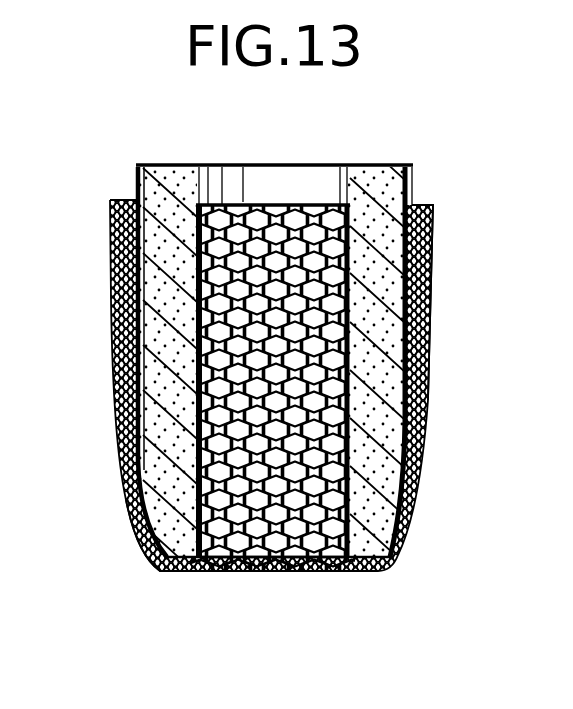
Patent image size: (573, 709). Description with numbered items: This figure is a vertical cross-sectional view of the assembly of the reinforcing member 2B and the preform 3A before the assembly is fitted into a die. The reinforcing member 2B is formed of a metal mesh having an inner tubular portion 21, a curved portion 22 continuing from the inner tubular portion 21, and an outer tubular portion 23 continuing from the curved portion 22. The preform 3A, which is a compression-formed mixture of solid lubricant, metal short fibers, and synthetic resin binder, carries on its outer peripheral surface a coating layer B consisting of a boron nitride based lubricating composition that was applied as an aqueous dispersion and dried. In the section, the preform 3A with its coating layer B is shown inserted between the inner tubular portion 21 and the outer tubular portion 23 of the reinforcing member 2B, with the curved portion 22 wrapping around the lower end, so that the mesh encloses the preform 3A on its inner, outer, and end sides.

The reinforcing member 2B is at (432, 210).
The outer tubular portion 23 is at (113, 370).
The preform 3A is at (397, 340).
The coating layer B is at (423, 427).
The inner tubular portion 21 is at (218, 573).
The curved portion 22 is at (157, 575).